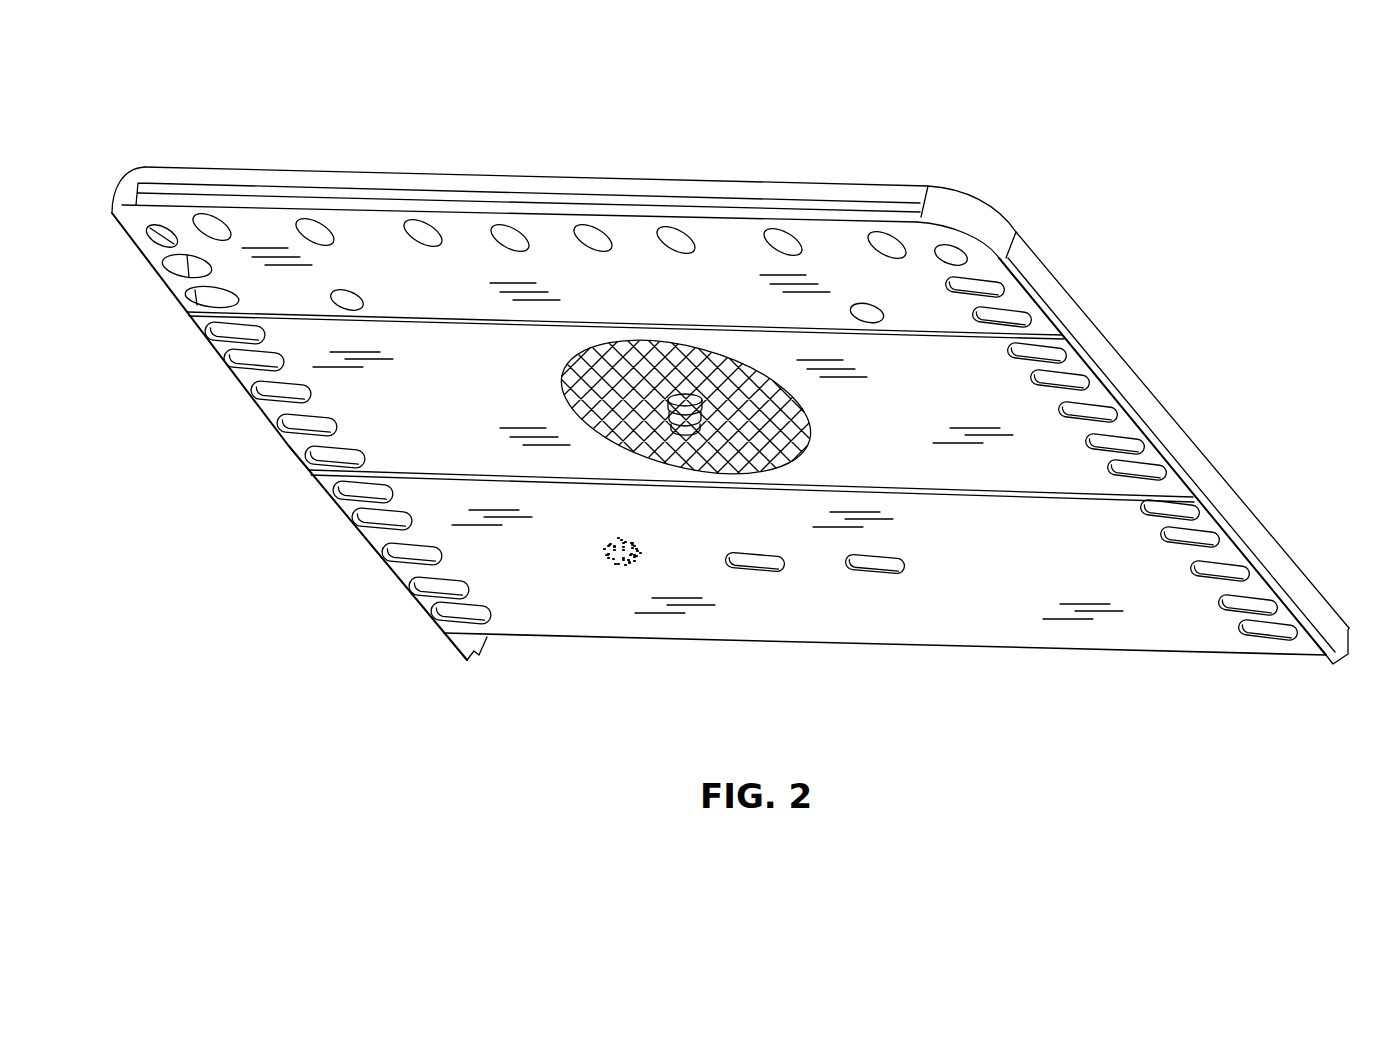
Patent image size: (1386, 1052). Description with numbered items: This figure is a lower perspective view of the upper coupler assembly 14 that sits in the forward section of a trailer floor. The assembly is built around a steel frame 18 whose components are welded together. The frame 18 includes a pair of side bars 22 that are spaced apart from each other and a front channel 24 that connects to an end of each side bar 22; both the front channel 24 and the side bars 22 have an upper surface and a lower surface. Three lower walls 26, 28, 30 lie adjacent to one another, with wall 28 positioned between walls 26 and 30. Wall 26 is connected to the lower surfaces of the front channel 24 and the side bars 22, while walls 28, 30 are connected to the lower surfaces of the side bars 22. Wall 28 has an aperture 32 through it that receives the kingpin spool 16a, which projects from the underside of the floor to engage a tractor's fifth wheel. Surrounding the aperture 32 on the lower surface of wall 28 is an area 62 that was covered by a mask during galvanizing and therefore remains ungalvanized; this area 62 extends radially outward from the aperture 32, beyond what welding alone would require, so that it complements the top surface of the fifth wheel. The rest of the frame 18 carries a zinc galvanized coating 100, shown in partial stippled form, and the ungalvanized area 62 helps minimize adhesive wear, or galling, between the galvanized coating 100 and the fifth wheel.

The upper coupler assembly 14 is at (982, 145).
The frame 18 is at (1133, 380).
The side bars 22 is at (1180, 447).
The front channel 24 is at (315, 180).
The lower wall 26 is at (657, 304).
The lower wall 28 is at (465, 410).
The lower wall 30 is at (1030, 586).
The aperture 32 is at (680, 394).
The area 62 is at (586, 368).
The galvanized coating 100 is at (627, 572).
The spool 16a is at (678, 440).